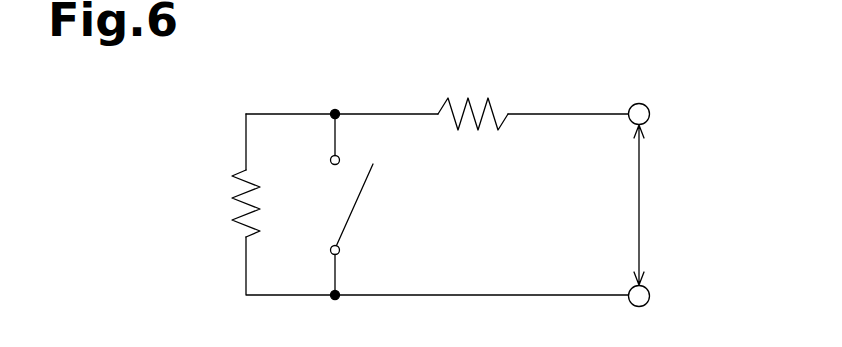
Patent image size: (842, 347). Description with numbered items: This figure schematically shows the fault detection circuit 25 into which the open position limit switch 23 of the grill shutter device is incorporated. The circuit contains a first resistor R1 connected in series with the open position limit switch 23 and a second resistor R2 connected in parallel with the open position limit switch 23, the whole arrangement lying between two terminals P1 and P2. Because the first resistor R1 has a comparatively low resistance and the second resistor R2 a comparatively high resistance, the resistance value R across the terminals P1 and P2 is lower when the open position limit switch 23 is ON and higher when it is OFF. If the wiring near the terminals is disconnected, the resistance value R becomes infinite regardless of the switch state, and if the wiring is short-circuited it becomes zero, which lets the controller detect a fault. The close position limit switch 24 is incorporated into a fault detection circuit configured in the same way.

The fault detection circuit 25 is at (231, 83).
The first resistor R1 is at (473, 98).
The second resistor R2 is at (240, 190).
The open position limit switch 23 is at (404, 204).
The close position limit switch 24 is at (360, 200).
The terminal P1 is at (649, 110).
The terminal P2 is at (649, 292).
The resistance value R is at (650, 205).